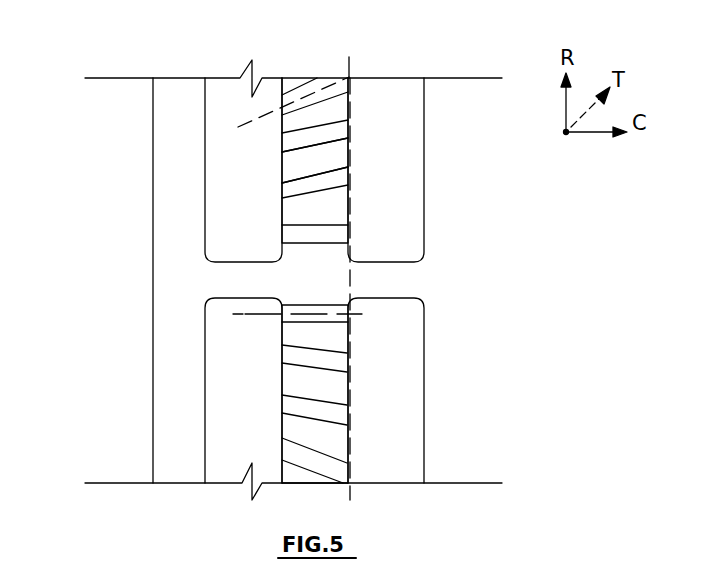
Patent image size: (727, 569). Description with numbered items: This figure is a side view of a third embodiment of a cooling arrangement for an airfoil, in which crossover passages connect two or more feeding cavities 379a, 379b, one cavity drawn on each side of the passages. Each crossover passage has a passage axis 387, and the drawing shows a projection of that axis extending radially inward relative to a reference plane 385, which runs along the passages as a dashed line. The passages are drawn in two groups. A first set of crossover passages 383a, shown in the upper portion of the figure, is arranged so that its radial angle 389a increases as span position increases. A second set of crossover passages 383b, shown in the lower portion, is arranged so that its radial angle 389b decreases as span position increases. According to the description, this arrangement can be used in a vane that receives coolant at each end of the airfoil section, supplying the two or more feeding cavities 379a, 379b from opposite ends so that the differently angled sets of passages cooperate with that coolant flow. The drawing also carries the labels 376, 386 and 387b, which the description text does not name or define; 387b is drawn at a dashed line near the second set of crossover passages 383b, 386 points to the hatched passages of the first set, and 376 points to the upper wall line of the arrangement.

The wall 376 is at (137, 70).
The passage axis 387 is at (253, 121).
The first set of crossover passages 383a is at (313, 50).
The reference plane 385 is at (343, 77).
The radial angle 389a is at (327, 90).
The turbulators 386 is at (338, 140).
The feeding cavity 379a is at (424, 92).
The second set of crossover passages 383b is at (287, 285).
The second reference line 387b is at (238, 313).
The radial angle 389b is at (323, 323).
The feeding cavity 379b is at (424, 392).